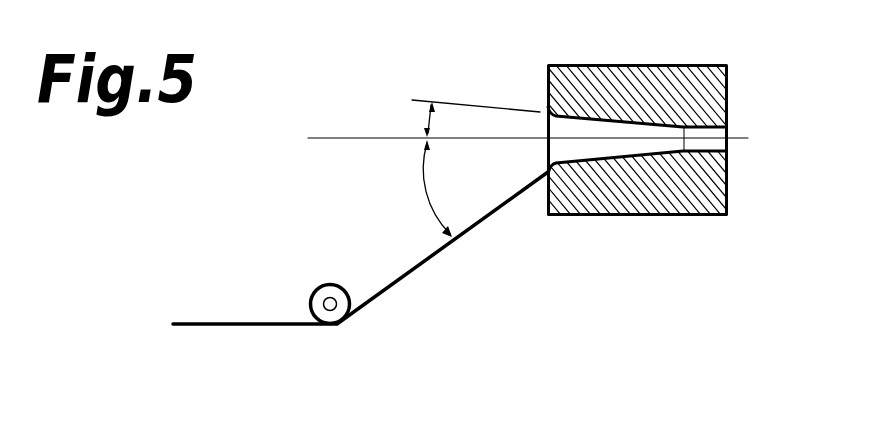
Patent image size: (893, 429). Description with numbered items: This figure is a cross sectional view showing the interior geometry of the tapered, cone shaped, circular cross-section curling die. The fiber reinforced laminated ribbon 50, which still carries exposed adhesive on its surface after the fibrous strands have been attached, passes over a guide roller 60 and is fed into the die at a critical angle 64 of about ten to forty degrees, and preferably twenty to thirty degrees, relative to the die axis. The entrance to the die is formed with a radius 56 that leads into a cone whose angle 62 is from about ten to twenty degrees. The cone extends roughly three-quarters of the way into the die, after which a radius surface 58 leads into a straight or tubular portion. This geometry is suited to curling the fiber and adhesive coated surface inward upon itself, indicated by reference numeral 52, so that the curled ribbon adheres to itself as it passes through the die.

The fiber reinforced laminated ribbon 50 is at (257, 323).
The curling of the fiber and adhesive coated surface inward upon itself 52 is at (275, 425).
The radius 56 is at (547, 123).
The radius surface 58 is at (687, 151).
The guide roller 60 is at (337, 327).
The angle of the cone 62 is at (425, 118).
The critical angle 64 is at (425, 188).